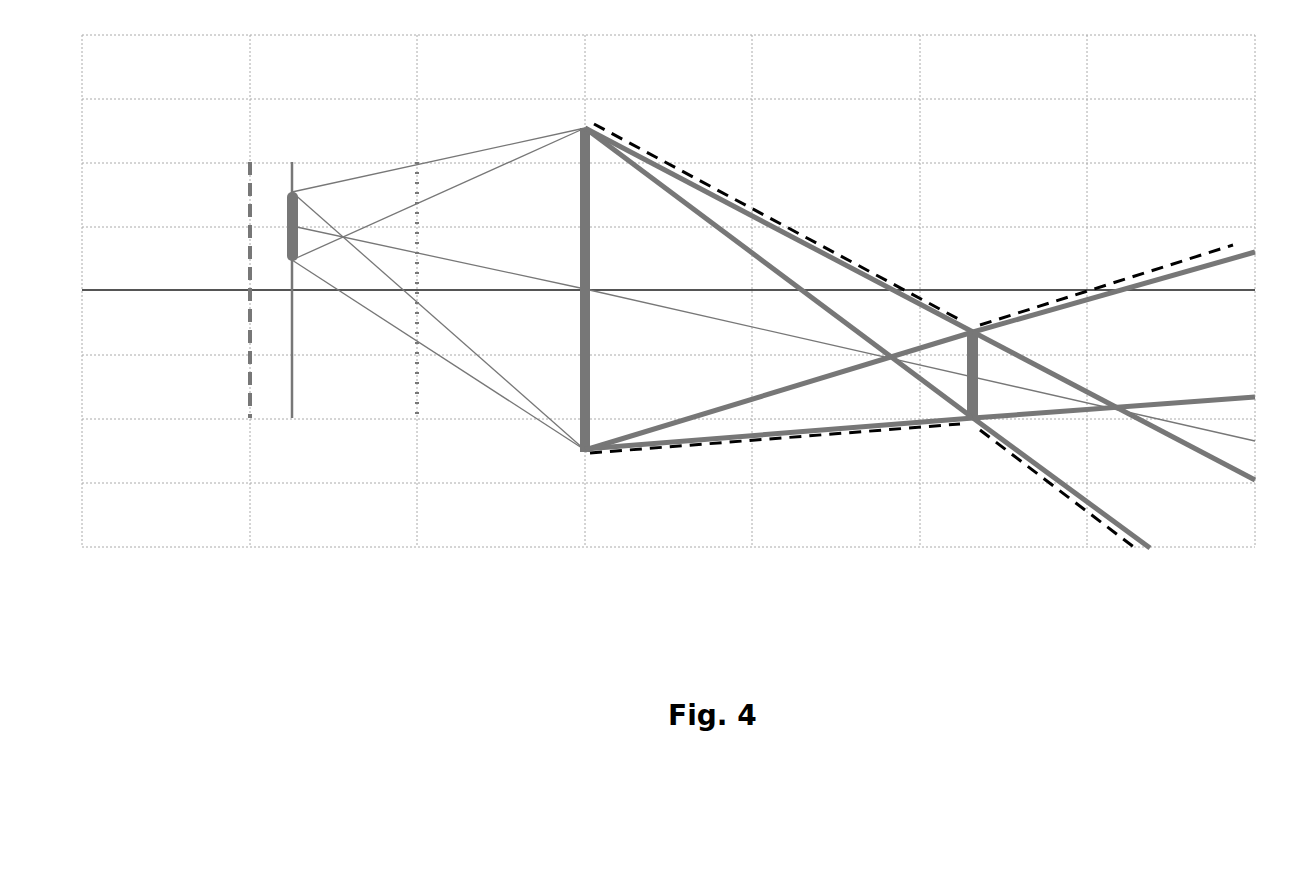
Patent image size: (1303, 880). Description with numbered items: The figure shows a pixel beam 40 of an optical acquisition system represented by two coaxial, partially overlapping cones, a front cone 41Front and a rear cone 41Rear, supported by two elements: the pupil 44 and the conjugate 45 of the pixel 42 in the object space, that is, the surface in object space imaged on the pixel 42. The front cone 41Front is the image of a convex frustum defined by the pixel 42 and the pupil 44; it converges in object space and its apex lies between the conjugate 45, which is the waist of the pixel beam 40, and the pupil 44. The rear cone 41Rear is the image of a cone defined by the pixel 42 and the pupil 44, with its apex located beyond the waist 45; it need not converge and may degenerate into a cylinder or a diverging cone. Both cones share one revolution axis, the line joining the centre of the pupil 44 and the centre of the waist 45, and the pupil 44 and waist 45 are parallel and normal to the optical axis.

The pixel beam 40 is at (930, 432).
The front cone 41Front is at (1052, 377).
The rear cone 41Rear is at (732, 395).
The pixel 42 is at (290, 200).
The pupil 44 is at (573, 230).
The conjugate of the pixel 45 is at (967, 362).